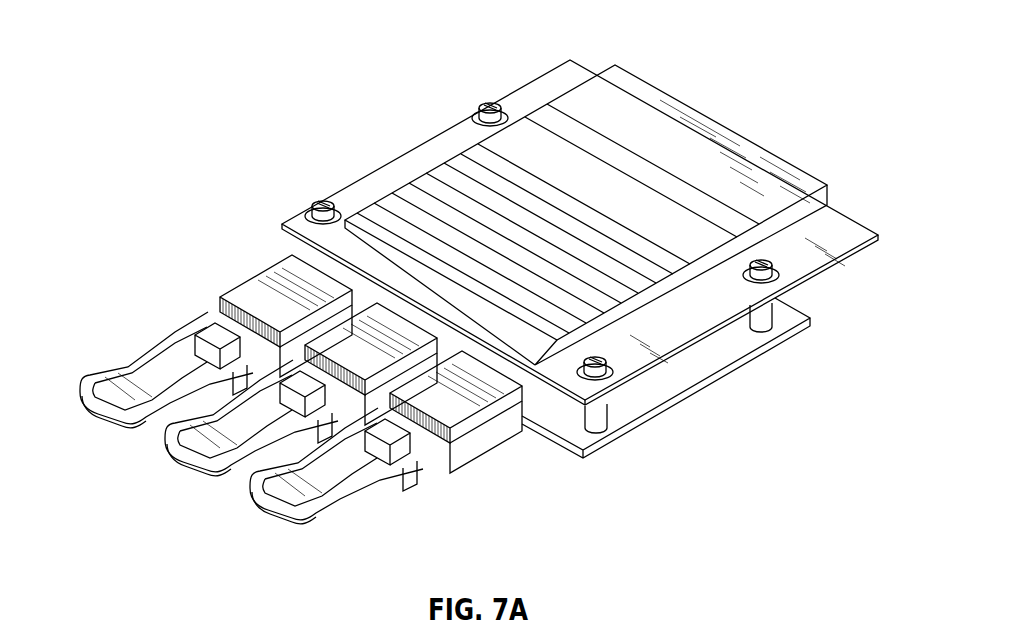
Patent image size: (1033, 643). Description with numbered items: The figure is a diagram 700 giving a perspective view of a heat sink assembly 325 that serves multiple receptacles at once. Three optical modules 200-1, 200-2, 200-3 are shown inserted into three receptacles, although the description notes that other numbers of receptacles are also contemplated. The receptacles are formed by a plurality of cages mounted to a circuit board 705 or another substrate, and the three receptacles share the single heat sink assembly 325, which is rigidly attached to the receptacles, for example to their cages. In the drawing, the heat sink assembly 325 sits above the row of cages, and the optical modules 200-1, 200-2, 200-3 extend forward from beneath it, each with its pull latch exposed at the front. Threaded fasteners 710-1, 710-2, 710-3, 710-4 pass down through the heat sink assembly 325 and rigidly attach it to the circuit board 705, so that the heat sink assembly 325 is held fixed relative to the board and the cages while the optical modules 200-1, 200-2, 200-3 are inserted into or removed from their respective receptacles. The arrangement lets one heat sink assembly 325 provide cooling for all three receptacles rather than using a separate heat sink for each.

The diagram 700 is at (791, 36).
The heat sink assembly 325 is at (804, 158).
The circuit board 705 is at (690, 394).
The threaded fastener 710-1 is at (487, 112).
The threaded fastener 710-2 is at (320, 208).
The threaded fastener 710-3 is at (604, 412).
The threaded fastener 710-4 is at (770, 320).
The optical module 200-1 is at (94, 396).
The optical module 200-2 is at (176, 450).
The optical module 200-3 is at (258, 500).